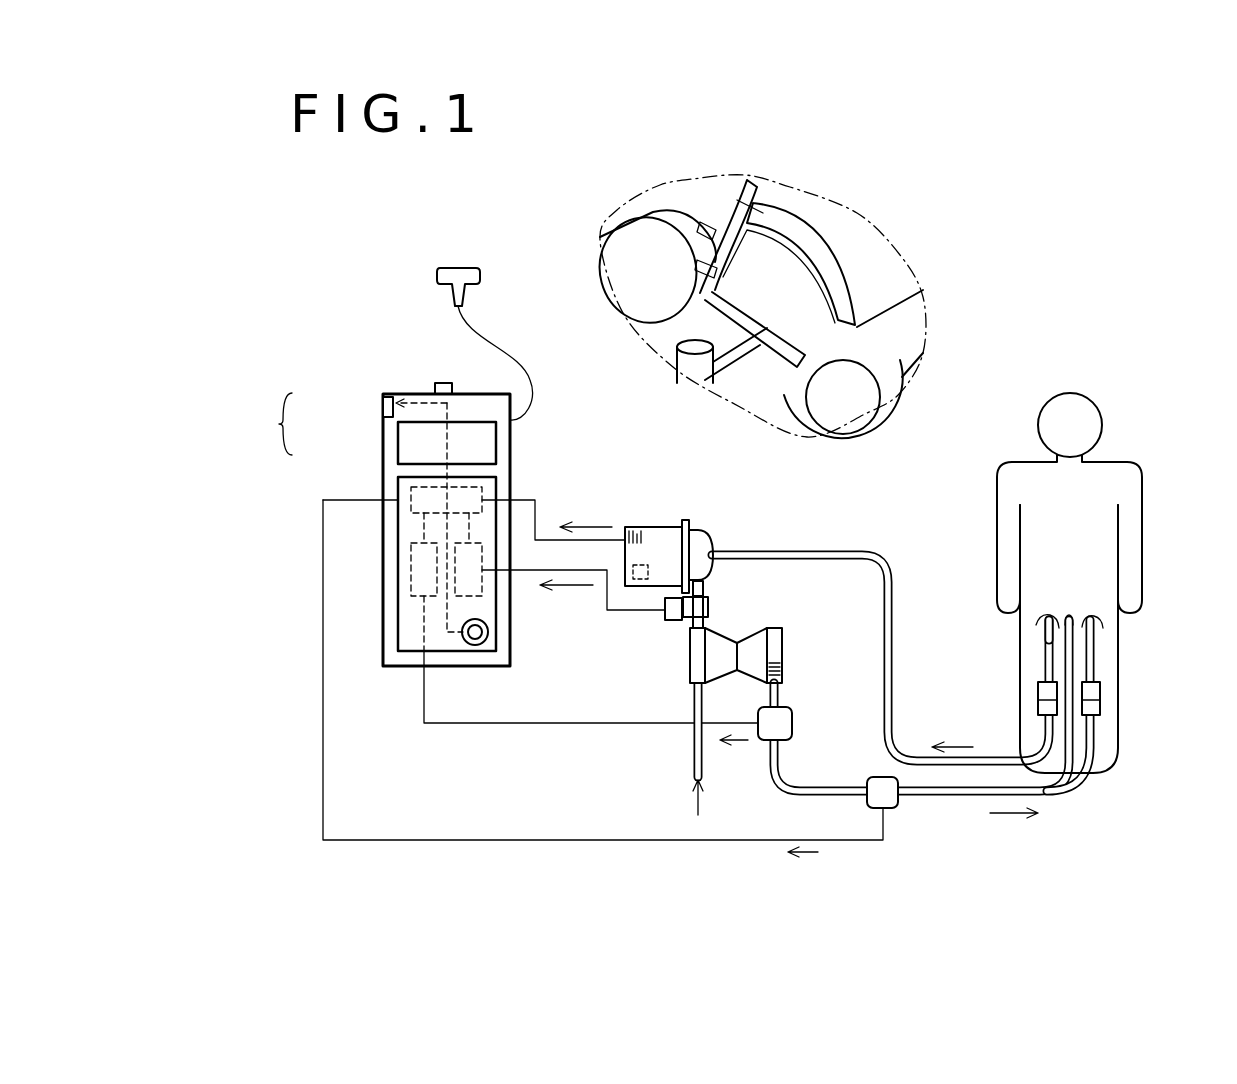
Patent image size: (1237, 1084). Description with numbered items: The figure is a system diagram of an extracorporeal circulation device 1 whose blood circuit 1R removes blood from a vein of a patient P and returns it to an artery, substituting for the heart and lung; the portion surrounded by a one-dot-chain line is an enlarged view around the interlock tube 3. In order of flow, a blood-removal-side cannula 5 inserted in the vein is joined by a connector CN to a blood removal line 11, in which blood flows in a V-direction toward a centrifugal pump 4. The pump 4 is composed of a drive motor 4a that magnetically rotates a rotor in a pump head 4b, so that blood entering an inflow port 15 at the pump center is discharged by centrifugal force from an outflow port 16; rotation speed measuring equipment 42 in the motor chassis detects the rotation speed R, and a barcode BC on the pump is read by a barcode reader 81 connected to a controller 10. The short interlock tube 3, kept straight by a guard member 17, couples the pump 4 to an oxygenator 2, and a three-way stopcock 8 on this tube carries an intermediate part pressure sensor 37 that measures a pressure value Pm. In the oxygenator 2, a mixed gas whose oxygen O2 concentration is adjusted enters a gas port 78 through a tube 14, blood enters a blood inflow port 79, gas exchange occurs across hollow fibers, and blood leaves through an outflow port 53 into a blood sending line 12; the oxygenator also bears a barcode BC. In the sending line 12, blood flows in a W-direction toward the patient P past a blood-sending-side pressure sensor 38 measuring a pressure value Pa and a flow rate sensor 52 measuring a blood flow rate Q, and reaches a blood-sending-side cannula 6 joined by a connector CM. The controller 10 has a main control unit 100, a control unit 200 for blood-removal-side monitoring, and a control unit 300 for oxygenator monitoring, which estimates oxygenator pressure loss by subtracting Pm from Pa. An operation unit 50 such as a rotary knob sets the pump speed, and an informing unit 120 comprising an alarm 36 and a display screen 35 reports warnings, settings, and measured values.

The extracorporeal circulation device 1 is at (345, 334).
The controller 10 is at (405, 388).
The barcode reader 81 is at (452, 266).
The informing unit 120 is at (256, 424).
The alarm 36 is at (385, 405).
The display screen 35 is at (405, 443).
The main control unit 100 is at (412, 490).
The control unit for oxygenator monitoring 300 is at (412, 587).
The control unit for blood-removal-side monitoring 200 is at (476, 596).
The operation unit 50 is at (477, 647).
The rotation speed measuring equipment 42 is at (633, 572).
The centrifugal pump 4 is at (652, 373).
The drive motor 4a is at (658, 527).
The pump head 4b is at (702, 535).
The interlock tube 3 is at (705, 589).
The three-way stopcock 8 is at (708, 606).
The intermediate part pressure sensor 37 is at (673, 620).
The gas port 78 is at (690, 685).
The blood inflow port 79 is at (710, 625).
The oxygenator 2 is at (783, 640).
The tube 14 is at (693, 748).
The outflow port 53 is at (780, 696).
The blood-sending-side pressure sensor 38 is at (795, 725).
The flow rate sensor 52 is at (890, 812).
The blood removal line 11 is at (893, 606).
The blood sending line 12 is at (1055, 797).
The blood-removal-side cannula 5 is at (1043, 658).
The blood-sending-side cannula 6 is at (1094, 648).
The inflow port 15 is at (708, 230).
The outflow port 16 is at (700, 258).
The guard member 17 is at (776, 306).
The barcode BC is at (632, 527).
The rotation speed R is at (580, 520).
The pressure value Pm is at (568, 596).
The pressure value Pa is at (742, 745).
The oxygen O2 is at (693, 800).
The blood flow rate Q is at (810, 857).
The W-direction W is at (997, 820).
The V-direction V is at (967, 747).
The patient P is at (1143, 478).
The connector CN is at (1040, 692).
The connector CM is at (1100, 705).
The blood circuit 1R is at (905, 528).